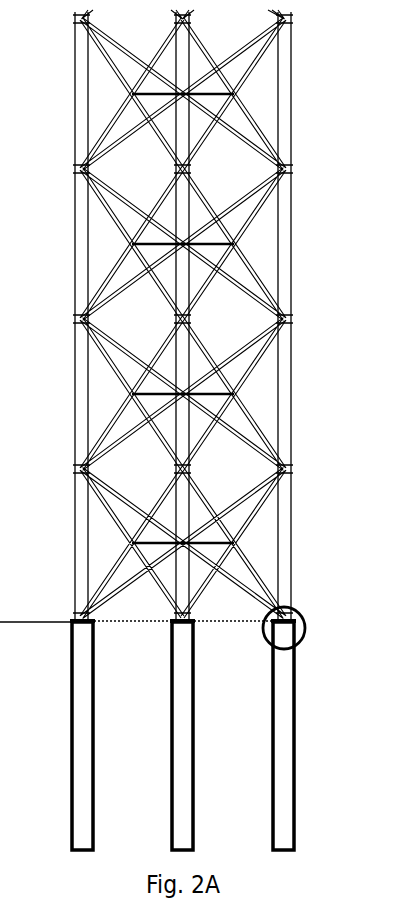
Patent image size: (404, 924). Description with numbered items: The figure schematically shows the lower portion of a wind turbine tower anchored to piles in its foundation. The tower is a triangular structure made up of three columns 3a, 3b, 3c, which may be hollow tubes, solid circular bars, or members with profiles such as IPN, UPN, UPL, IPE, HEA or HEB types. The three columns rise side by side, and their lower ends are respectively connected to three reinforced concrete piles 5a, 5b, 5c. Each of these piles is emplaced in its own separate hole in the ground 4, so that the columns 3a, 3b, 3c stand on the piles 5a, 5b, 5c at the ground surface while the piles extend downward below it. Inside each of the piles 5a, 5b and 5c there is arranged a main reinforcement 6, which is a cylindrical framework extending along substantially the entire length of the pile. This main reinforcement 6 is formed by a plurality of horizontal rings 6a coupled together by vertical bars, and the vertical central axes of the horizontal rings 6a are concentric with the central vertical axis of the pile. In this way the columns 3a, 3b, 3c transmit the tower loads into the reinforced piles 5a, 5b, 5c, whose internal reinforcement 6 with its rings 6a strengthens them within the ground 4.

The column 3a is at (283, 248).
The column 3b is at (185, 205).
The column 3c is at (82, 233).
The ground 4 is at (39, 621).
The reinforced concrete pile 5a is at (282, 765).
The reinforced concrete pile 5b is at (182, 743).
The reinforced concrete pile 5c is at (87, 734).
The main reinforcement 6 is at (333, 519).
The horizontal ring 6a is at (306, 626).